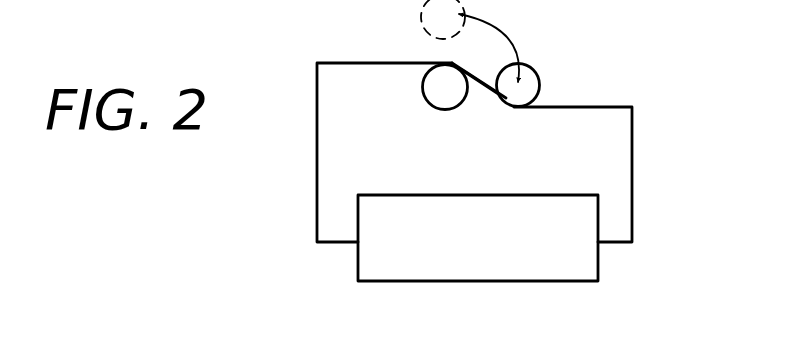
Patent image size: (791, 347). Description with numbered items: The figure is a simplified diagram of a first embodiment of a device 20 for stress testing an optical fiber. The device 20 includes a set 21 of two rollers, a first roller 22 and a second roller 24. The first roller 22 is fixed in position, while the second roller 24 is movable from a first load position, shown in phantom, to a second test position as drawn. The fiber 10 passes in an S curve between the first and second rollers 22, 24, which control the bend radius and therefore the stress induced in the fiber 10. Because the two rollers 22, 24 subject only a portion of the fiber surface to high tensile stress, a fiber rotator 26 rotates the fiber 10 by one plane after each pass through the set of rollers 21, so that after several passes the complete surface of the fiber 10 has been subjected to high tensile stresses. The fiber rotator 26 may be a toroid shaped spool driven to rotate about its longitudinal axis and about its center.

The fiber 10 is at (633, 162).
The device 20 is at (577, 91).
The set of two rollers 21 is at (477, 104).
The first roller 22 is at (427, 106).
The second roller 24 is at (538, 72).
The fiber rotator 26 is at (472, 283).